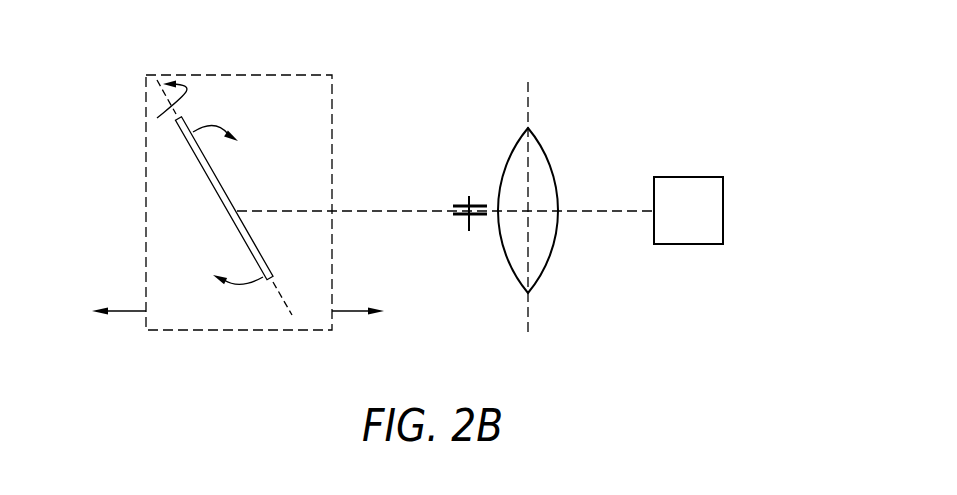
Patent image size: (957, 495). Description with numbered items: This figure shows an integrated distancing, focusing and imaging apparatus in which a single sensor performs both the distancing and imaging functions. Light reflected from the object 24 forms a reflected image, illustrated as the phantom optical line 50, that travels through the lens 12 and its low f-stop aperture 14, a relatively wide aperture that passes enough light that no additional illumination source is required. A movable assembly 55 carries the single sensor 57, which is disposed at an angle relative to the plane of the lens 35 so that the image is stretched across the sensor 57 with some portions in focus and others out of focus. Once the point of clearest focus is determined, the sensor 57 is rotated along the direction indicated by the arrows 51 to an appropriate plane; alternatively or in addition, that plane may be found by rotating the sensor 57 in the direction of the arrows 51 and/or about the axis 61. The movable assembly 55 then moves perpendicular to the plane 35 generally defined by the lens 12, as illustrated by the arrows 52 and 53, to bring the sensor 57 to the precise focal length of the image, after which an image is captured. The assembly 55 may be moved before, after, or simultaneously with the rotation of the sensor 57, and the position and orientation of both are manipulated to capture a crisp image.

The lens assembly 12 is at (546, 156).
The low f-stop aperture 14 is at (469, 196).
The object 24 is at (687, 177).
The plane of the lens 35 is at (533, 213).
The phantom optical line 50 is at (608, 210).
The arrows 51 is at (228, 206).
The arrow 52 is at (102, 312).
The arrow 53 is at (377, 312).
The movable assembly 55 is at (252, 64).
The sensor 57 is at (180, 155).
The axis 61 is at (162, 96).